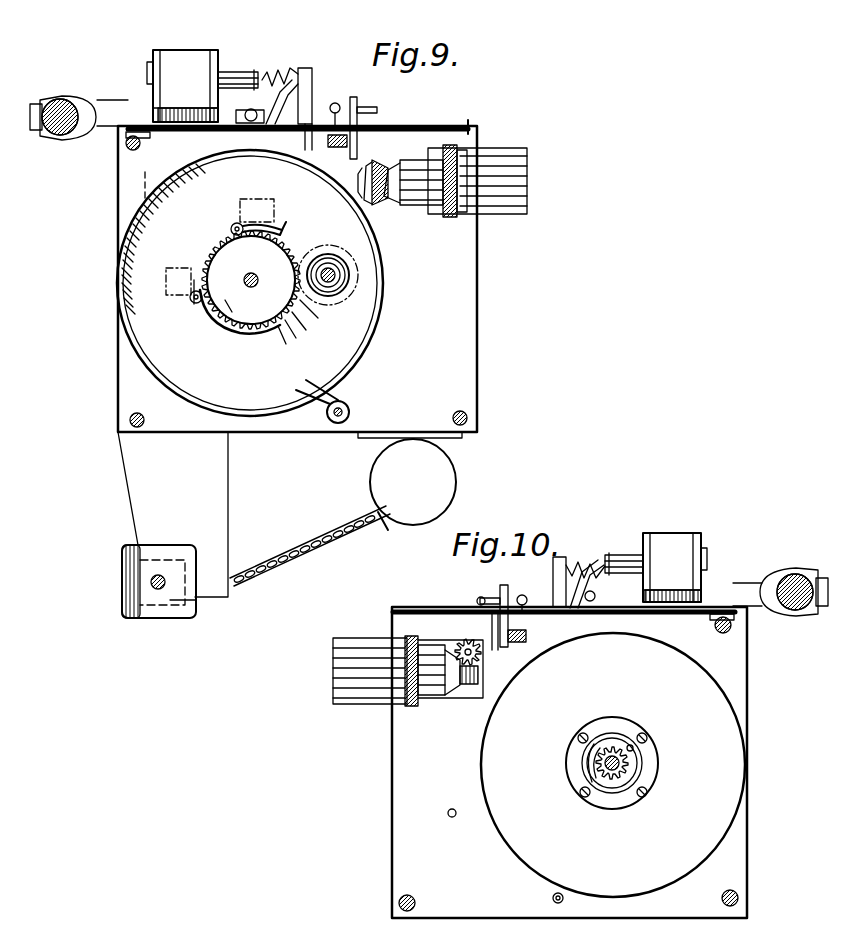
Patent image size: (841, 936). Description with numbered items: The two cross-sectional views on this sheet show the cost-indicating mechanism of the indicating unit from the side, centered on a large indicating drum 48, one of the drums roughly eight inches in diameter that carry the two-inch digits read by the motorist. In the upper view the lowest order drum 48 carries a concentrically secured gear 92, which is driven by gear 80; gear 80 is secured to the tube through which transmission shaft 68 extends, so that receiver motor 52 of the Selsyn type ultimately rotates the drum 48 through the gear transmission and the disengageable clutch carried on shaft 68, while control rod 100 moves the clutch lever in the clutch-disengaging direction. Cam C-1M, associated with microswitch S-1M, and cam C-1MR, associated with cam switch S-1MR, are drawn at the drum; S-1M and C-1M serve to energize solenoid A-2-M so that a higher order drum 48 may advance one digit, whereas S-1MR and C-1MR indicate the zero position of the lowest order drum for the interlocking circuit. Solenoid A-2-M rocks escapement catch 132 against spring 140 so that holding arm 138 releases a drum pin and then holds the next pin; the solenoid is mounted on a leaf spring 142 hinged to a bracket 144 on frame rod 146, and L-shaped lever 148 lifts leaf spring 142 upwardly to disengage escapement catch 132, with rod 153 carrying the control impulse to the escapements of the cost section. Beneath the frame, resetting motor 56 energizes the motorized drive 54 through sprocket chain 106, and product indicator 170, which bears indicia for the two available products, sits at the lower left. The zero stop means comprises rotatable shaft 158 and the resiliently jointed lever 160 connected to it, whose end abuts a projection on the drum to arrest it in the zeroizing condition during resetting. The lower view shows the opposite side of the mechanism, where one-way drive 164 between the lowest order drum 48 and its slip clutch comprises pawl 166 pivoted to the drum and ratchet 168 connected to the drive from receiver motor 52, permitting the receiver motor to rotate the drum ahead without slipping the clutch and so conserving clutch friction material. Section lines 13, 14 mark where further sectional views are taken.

In FIG. 9, the indicating drum 48 is at (383, 333).
In FIG. 10, the indicating drum 48 is at (725, 724).
In FIG. 9, the receiver motor 52 is at (487, 162).
In FIG. 10, the receiver motor 52 is at (365, 658).
In FIG. 9, the motorized drive 54 is at (296, 552).
In FIG. 9, the resetting motor 56 is at (440, 478).
In FIG. 9, the transmission shaft 68 is at (348, 266).
In FIG. 9, the gear 80 is at (350, 276).
In FIG. 9, the gear 92 is at (296, 320).
In FIG. 10, the control rod 100 is at (450, 817).
In FIG. 9, the sprocket chain 106 is at (378, 528).
In FIG. 9, the escapement catch 132 is at (318, 142).
In FIG. 10, the escapement catch 132 is at (520, 622).
In FIG. 9, the holding arm 138 is at (236, 141).
In FIG. 10, the holding arm 138 is at (640, 614).
In FIG. 9, the spring 140 is at (300, 72).
In FIG. 10, the spring 140 is at (583, 560).
In FIG. 9, the leaf spring 142 is at (312, 102).
In FIG. 10, the leaf spring 142 is at (538, 598).
In FIG. 9, the bracket 144 is at (148, 112).
In FIG. 10, the bracket 144 is at (720, 604).
In FIG. 9, the frame rod 146 is at (128, 145).
In FIG. 10, the frame rod 146 is at (724, 635).
In FIG. 9, the L-shaped lever 148 is at (358, 110).
In FIG. 10, the L-shaped lever 148 is at (502, 590).
In FIG. 9, the rod 153 is at (378, 112).
In FIG. 10, the rod 153 is at (478, 601).
In FIG. 9, the rotatable shaft 158 is at (350, 412).
In FIG. 10, the rotatable shaft 158 is at (552, 898).
In FIG. 9, the resiliently jointed lever 160 is at (335, 404).
In FIG. 10, the one-way drive 164 is at (634, 762).
In FIG. 10, the pawl 166 is at (618, 742).
In FIG. 10, the ratchet 168 is at (626, 778).
In FIG. 9, the product indicator 170 is at (121, 588).
In FIG. 9, the section line 13 is at (190, 456).
In FIG. 9, the section line 14 is at (146, 313).
In FIG. 9, the solenoid A-2-M is at (178, 60).
In FIG. 10, the solenoid A-2-M is at (668, 545).
In FIG. 9, the microswitch S-1M is at (246, 199).
In FIG. 9, the cam C-1M is at (284, 226).
In FIG. 9, the cam switch S-1MR is at (180, 268).
In FIG. 9, the cam C-1MR is at (232, 330).